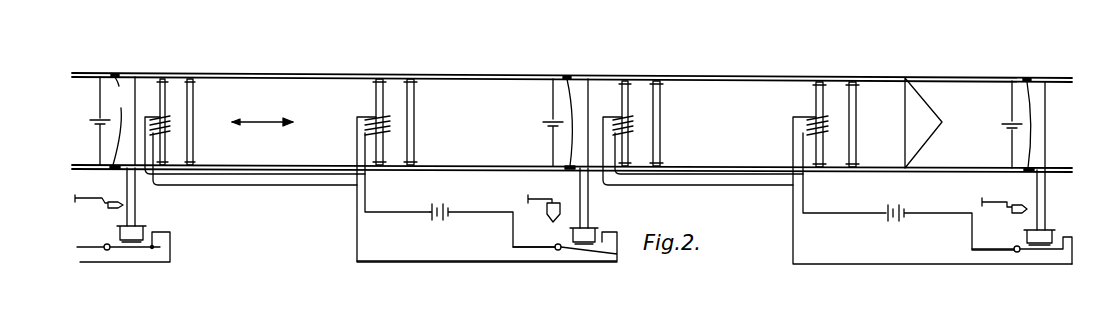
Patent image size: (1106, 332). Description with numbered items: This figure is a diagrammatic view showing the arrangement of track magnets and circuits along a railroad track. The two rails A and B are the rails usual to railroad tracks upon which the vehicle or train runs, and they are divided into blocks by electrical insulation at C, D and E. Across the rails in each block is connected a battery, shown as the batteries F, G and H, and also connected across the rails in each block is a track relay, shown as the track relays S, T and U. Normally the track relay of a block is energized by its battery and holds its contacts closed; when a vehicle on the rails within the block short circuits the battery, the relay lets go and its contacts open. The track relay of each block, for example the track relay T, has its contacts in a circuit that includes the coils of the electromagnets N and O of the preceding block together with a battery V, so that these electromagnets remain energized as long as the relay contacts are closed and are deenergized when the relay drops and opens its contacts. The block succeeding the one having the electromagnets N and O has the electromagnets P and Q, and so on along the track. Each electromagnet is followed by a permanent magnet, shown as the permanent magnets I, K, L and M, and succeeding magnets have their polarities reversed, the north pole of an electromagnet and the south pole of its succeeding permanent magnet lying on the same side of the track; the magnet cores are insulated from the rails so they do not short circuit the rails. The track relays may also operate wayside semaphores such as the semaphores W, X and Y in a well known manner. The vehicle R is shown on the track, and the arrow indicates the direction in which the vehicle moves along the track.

The rail A is at (500, 76).
The rail B is at (502, 163).
The electrical insulation C is at (116, 121).
The electrical insulation D is at (567, 122).
The electrical insulation E is at (1025, 124).
The battery F is at (89, 120).
The battery G is at (542, 122).
The battery H is at (1001, 124).
The permanent magnet I is at (193, 107).
The permanent magnet K is at (414, 113).
The permanent magnet L is at (660, 113).
The permanent magnet M is at (856, 115).
The electromagnet N is at (160, 102).
The electromagnet O is at (376, 103).
The electromagnet P is at (622, 104).
The electromagnet Q is at (816, 104).
The vehicle R is at (923, 123).
The track relay S is at (140, 229).
The track relay T is at (594, 233).
The track relay U is at (1050, 235).
The battery V is at (443, 210).
The wayside semaphore W is at (99, 191).
The wayside semaphore X is at (544, 198).
The wayside semaphore Y is at (1004, 194).